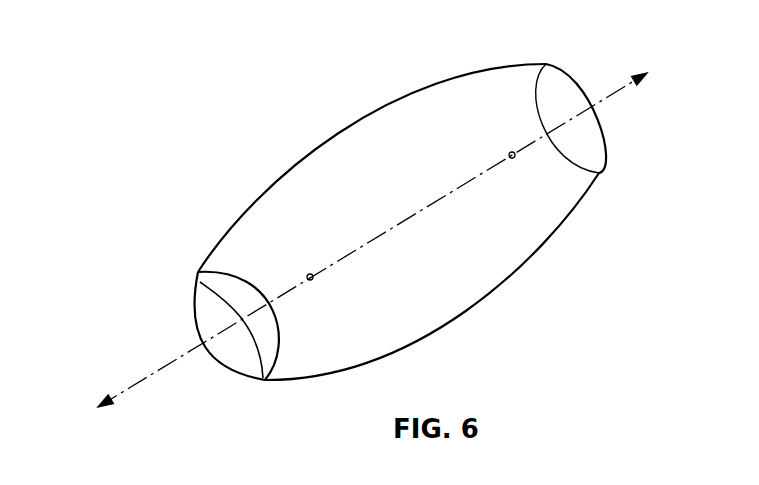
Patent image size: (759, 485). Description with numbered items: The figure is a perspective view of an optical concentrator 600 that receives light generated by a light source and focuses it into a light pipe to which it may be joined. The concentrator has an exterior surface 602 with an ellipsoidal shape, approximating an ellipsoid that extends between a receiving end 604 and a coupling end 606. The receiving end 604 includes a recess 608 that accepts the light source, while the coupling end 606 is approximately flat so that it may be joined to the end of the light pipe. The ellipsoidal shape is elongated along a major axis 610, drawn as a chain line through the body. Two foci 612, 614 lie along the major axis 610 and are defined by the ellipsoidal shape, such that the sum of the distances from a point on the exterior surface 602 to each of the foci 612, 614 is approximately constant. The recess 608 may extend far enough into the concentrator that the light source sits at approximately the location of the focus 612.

The optical concentrator 600 is at (195, 180).
The exterior surface 602 is at (320, 140).
The receiving end 604 is at (207, 297).
The coupling end 606 is at (560, 70).
The recess 608 is at (240, 353).
The major axis 610 is at (617, 95).
The focus 612 is at (312, 282).
The focus 614 is at (515, 160).